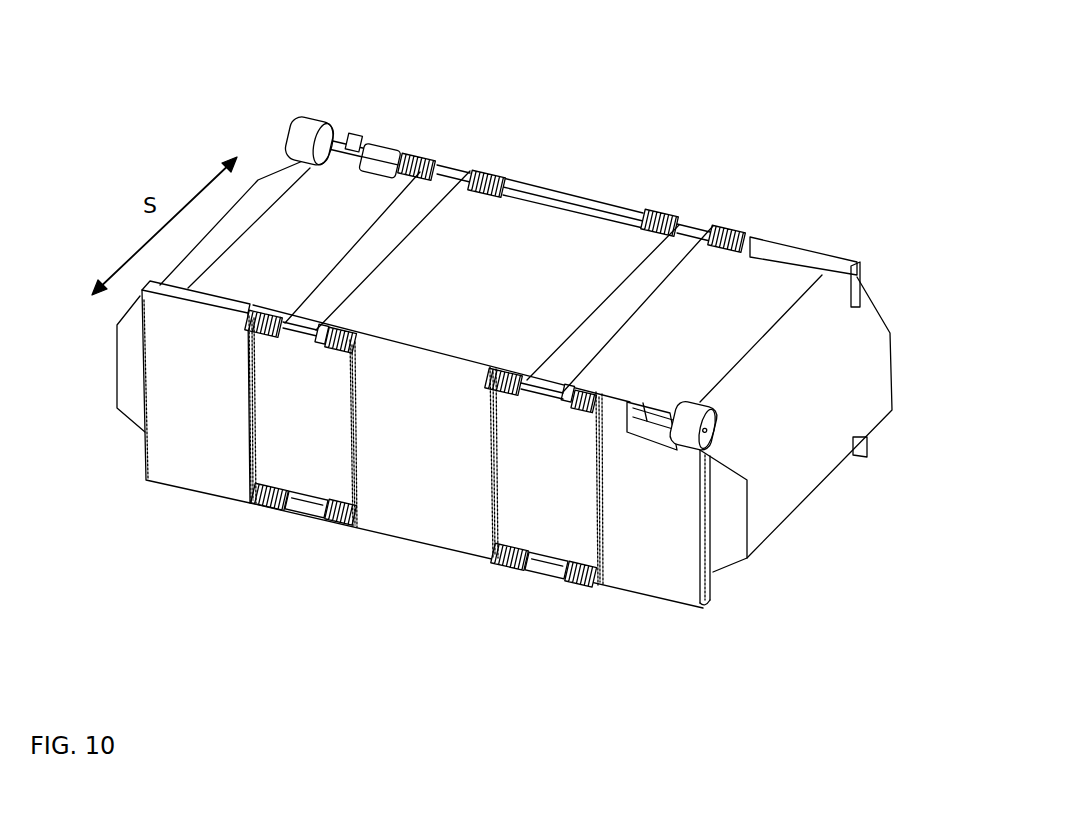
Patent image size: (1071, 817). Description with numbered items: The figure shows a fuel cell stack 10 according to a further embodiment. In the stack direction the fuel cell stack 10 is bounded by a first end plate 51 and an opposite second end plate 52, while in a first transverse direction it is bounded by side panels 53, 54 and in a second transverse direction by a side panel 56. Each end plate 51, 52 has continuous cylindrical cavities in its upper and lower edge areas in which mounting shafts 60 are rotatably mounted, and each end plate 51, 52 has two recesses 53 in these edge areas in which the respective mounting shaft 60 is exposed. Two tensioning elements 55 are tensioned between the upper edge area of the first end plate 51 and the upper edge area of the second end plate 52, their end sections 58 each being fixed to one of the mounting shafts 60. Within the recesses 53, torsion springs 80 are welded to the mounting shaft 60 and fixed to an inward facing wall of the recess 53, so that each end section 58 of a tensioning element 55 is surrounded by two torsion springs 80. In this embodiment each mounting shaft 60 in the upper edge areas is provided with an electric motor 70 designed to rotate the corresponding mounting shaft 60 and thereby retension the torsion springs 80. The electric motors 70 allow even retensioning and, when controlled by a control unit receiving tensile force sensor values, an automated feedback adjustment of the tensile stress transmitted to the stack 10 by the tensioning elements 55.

The fuel cell stack 10 is at (790, 176).
The first end plate 51 is at (190, 458).
The second end plate 52 is at (803, 240).
The recess 53 is at (123, 377).
The side panel 54 is at (793, 480).
The tensioning element 55 is at (450, 183).
The side panel 56 is at (531, 260).
The end section 58 is at (300, 327).
The mounting shaft 60 is at (860, 268).
The electric motor 70 is at (297, 137).
The torsion spring 80 is at (418, 155).